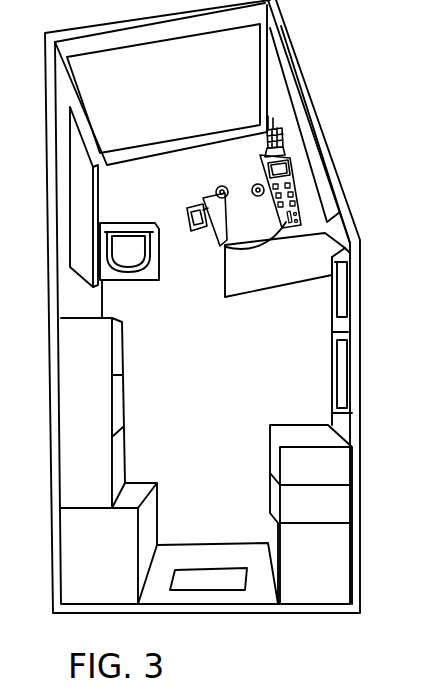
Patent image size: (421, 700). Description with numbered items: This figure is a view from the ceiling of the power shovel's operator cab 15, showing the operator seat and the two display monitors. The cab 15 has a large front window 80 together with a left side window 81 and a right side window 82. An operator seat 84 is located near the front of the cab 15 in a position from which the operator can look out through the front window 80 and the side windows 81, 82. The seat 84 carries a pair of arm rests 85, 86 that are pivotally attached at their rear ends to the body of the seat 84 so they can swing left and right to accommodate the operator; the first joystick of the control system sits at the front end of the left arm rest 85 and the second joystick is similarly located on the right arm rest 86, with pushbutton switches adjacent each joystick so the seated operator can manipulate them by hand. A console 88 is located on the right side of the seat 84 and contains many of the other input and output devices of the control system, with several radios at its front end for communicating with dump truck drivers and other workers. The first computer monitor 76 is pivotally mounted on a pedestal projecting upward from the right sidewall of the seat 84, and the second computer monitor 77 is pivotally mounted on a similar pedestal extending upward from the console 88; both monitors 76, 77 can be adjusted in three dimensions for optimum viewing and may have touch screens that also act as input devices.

The cab 15 is at (296, 57).
The front window 80 is at (254, 56).
The left side window 81 is at (96, 196).
The right side window 82 is at (287, 112).
The operator seat 84 is at (243, 250).
The left arm rest 85 is at (214, 192).
The right arm rest 86 is at (252, 186).
The first computer monitor 76 is at (199, 229).
The second computer monitor 77 is at (290, 164).
The console 88 is at (292, 200).